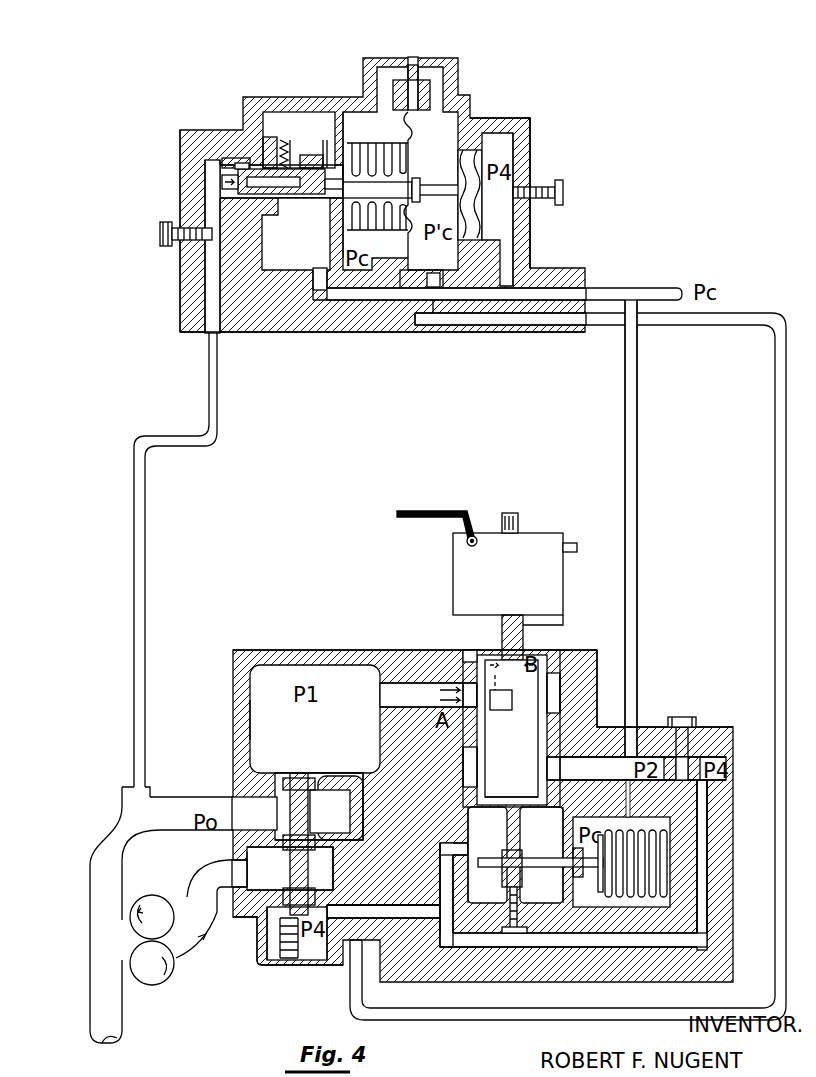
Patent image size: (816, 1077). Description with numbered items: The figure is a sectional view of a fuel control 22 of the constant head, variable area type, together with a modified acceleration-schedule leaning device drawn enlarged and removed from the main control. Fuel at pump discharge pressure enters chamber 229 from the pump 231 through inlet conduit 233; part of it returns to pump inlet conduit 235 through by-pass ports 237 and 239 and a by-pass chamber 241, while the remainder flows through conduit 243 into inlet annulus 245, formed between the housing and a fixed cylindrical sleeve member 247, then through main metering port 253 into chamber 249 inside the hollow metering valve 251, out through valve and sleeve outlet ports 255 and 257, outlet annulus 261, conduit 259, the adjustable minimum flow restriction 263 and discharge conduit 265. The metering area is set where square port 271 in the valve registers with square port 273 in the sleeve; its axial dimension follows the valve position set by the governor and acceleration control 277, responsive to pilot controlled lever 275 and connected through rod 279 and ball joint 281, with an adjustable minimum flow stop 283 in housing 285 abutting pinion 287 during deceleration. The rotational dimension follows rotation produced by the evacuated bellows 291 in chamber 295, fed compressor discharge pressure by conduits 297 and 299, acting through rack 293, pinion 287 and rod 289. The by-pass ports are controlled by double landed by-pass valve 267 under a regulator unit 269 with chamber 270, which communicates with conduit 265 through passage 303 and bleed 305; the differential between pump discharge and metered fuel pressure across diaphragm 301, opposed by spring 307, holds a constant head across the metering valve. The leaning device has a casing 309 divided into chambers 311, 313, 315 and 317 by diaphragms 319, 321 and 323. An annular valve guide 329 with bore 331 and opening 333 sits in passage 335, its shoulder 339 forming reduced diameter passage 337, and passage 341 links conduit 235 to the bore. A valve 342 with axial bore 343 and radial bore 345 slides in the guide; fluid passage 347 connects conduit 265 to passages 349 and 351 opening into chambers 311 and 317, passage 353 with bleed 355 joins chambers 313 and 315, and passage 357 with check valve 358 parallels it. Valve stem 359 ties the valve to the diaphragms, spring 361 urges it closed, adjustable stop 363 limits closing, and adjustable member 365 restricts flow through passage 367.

The fuel control 22 is at (298, 650).
The chamber 229 is at (318, 744).
The pump 231 is at (166, 986).
The inlet conduit 233 is at (197, 898).
The pump inlet conduit 235 is at (95, 870).
The by-pass port 237 is at (310, 783).
The by-pass port 239 is at (313, 845).
The by-pass chamber 241 is at (336, 808).
The conduit 243 is at (429, 695).
The inlet annulus 245 is at (465, 680).
The fixed cylindrical sleeve member 247 is at (470, 650).
The chamber 249 is at (527, 751).
The metering valve 251 is at (540, 655).
The main metering port 253 is at (560, 690).
The valve outlet port 255 is at (532, 770).
The sleeve outlet port 257 is at (560, 740).
The conduit 259 is at (643, 770).
The outlet annulus 261 is at (541, 854).
The adjustable minimum flow restriction 263 is at (692, 720).
The discharge conduit 265 is at (731, 733).
The by-pass valve 267 is at (300, 873).
The regulator unit 269 is at (307, 967).
The chamber 270 is at (332, 966).
The square port 271 is at (560, 668).
The square port 273 is at (600, 655).
The pilot controlled lever 275 is at (398, 512).
The governor and acceleration control 277 is at (535, 540).
The rod 279 is at (553, 625).
The ball joint 281 is at (503, 647).
The adjustable minimum flow stop 283 is at (512, 934).
The housing 285 is at (592, 982).
The pinion 287 is at (520, 858).
The rod 289 is at (513, 835).
The evacuated bellows 291 is at (653, 862).
The rack 293 is at (445, 905).
The chamber 295 is at (605, 901).
The conduit 297 is at (587, 293).
The conduit 299 is at (638, 526).
The by-pass valve diaphragm 301 is at (255, 918).
The passage 303 is at (707, 887).
The bleed 305 is at (440, 900).
The spring 307 is at (270, 967).
The casing 309 is at (457, 332).
The chamber 311 is at (310, 131).
The chamber 313 is at (388, 133).
The chamber 315 is at (447, 133).
The chamber 317 is at (510, 153).
The diaphragm 319 is at (342, 213).
The diaphragm 321 is at (400, 268).
The diaphragm 323 is at (470, 130).
The annular valve guide 329 is at (238, 160).
The bore 331 is at (250, 165).
The opening 333 is at (312, 155).
The passage 335 is at (182, 300).
The reduced diameter passage 337 is at (238, 185).
The shoulder 339 is at (230, 167).
The passage 341 is at (268, 135).
The valve 342 is at (282, 138).
The axial bore 343 is at (296, 234).
The radial bore 345 is at (330, 160).
The fluid passage 347 is at (733, 320).
The passage 349 is at (292, 333).
The passage 351 is at (513, 262).
The passage 353 is at (394, 70).
The bleed 355 is at (442, 68).
The passage 357 is at (436, 290).
The check valve 358 is at (435, 270).
The valve stem 359 is at (460, 150).
The spring 361 is at (388, 232).
The adjustable stop 363 is at (570, 178).
The adjustable member 365 is at (165, 240).
The passage 367 is at (212, 205).